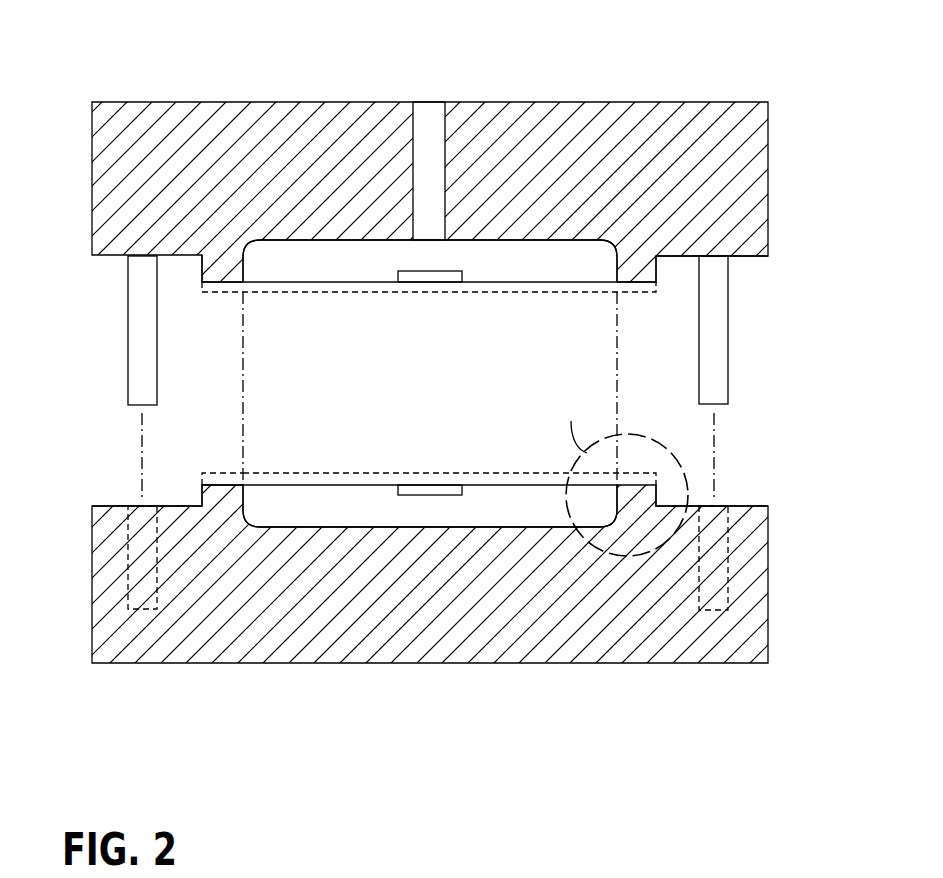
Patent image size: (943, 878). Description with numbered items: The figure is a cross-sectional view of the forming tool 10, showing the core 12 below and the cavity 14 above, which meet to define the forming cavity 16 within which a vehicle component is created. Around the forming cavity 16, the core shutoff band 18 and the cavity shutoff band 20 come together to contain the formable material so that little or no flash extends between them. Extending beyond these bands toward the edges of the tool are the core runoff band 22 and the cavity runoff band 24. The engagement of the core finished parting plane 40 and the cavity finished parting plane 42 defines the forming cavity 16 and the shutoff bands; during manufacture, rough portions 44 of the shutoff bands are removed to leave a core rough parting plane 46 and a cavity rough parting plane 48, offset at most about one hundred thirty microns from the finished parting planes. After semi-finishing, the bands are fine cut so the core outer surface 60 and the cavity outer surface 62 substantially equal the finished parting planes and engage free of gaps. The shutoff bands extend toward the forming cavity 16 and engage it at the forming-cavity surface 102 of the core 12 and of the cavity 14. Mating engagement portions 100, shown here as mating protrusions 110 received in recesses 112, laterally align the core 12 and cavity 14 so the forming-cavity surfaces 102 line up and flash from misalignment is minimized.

The forming tool 10 is at (122, 66).
The core 12 is at (91, 549).
The cavity 14 is at (91, 183).
The forming cavity 16 is at (298, 504).
The core shutoff band 18 is at (218, 497).
The cavity shutoff band 20 is at (232, 282).
The core runoff band 22 is at (740, 506).
The cavity runoff band 24 is at (747, 258).
The core finished parting plane 40 is at (367, 485).
The cavity finished parting plane 42 is at (482, 282).
The rough portions 44 is at (275, 480).
The core rough parting plane 46 is at (298, 472).
The cavity rough parting plane 48 is at (277, 293).
The core outer surface 60 is at (225, 485).
The cavity outer surface 62 is at (637, 283).
The mating engagement portions 100 is at (126, 316).
The forming-cavity surface 102 is at (565, 271).
The mating protrusions 110 is at (708, 363).
The recesses 112 is at (728, 568).